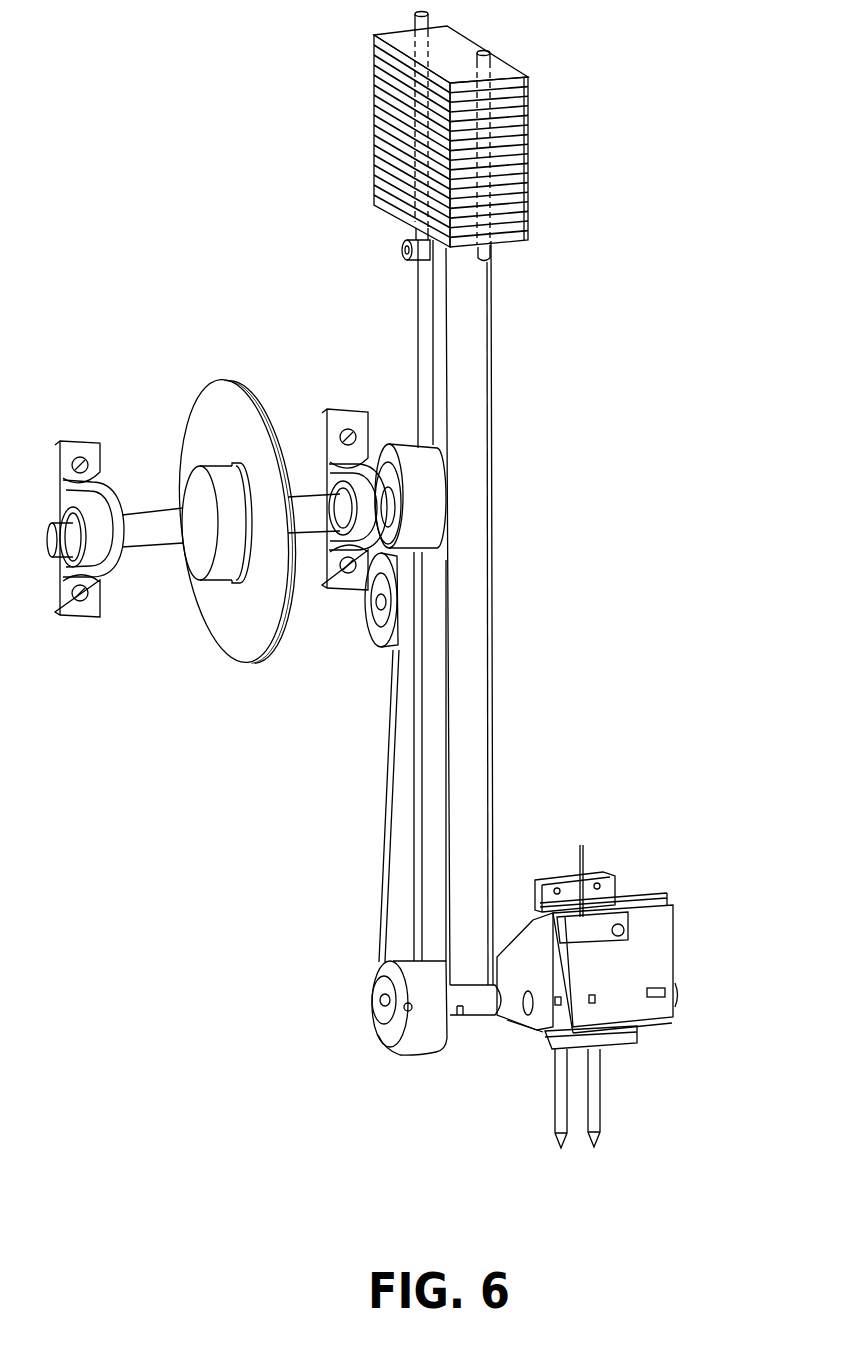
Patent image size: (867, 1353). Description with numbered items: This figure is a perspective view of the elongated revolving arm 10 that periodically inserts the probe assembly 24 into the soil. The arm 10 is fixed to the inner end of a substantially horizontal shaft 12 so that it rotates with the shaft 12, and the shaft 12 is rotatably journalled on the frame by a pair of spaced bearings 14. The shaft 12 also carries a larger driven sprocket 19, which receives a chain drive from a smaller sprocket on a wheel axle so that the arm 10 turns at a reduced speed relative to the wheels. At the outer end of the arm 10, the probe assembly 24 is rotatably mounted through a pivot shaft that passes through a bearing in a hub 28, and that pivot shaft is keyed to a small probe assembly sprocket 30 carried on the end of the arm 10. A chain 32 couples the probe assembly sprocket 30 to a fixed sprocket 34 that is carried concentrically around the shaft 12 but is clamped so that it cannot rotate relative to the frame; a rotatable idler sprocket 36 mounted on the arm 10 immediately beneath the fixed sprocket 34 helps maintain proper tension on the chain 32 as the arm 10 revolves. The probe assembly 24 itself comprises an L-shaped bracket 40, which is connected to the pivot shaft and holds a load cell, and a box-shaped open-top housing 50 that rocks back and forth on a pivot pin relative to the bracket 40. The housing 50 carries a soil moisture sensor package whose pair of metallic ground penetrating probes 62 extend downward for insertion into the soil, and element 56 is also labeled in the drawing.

The revolving arm 10 is at (463, 418).
The horizontal shaft 12 is at (143, 538).
The bearings 14 is at (73, 440).
The driven sprocket 19 is at (213, 420).
The probe assembly 24 is at (621, 949).
The hub 28 is at (480, 1000).
The probe assembly sprocket 30 is at (403, 968).
The chain 32 is at (398, 817).
The fixed sprocket 34 is at (403, 498).
The idler sprocket 36 is at (376, 628).
The L-shaped bracket 40 is at (531, 948).
The housing 50 is at (656, 928).
The cover plate 56 is at (630, 958).
The ground penetrating probes 62 is at (553, 1100).